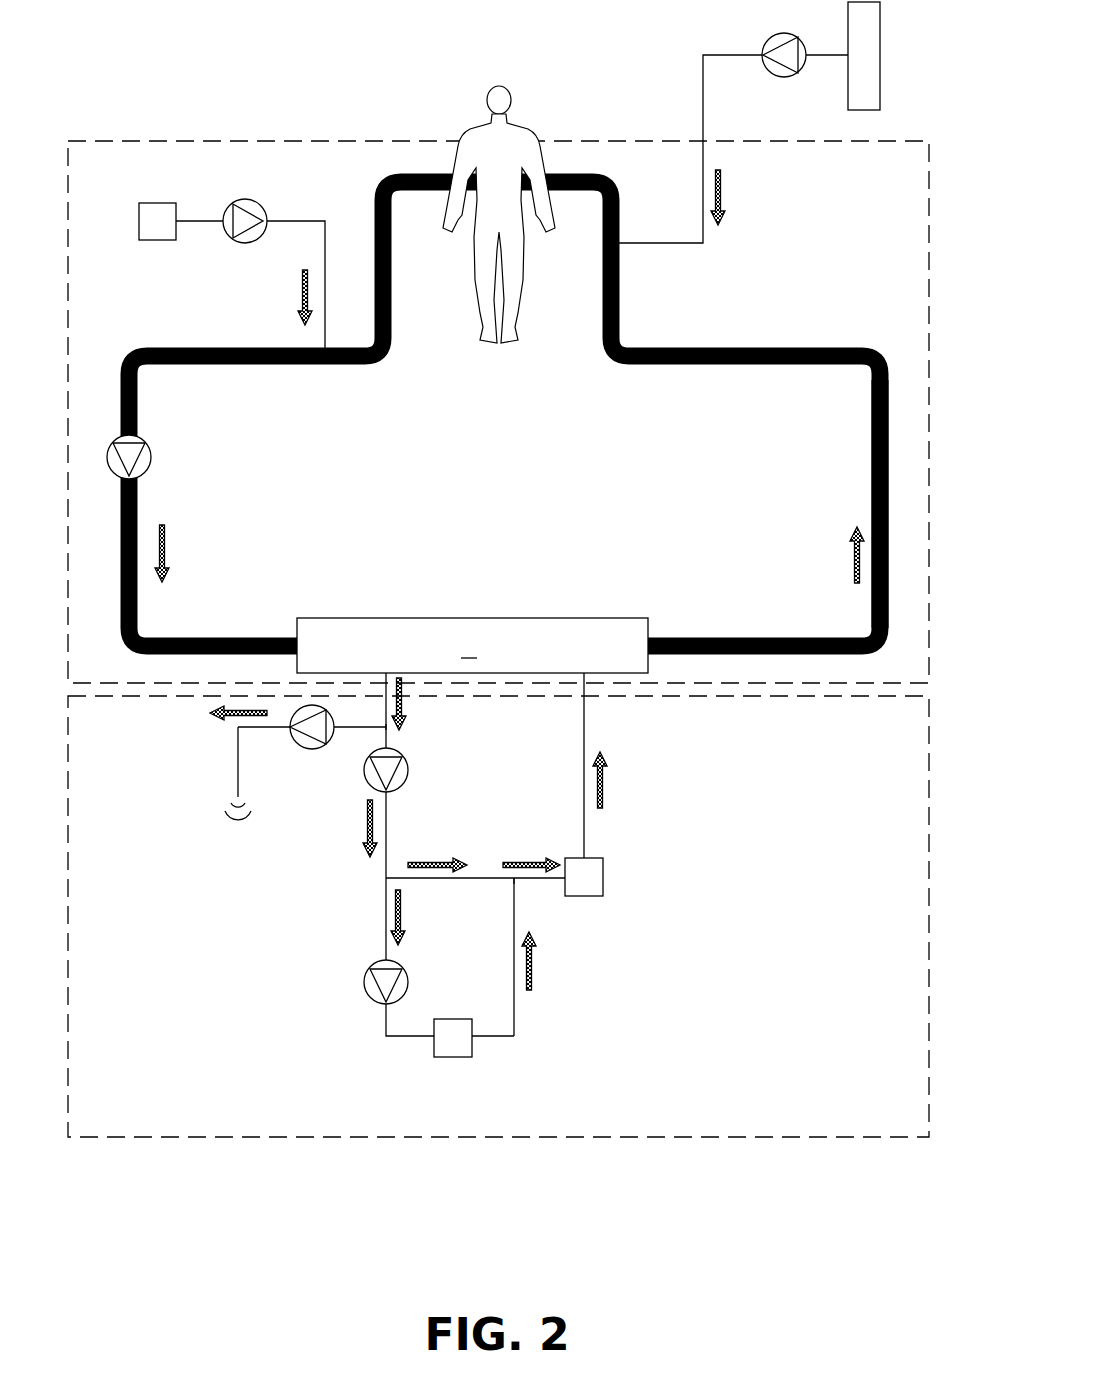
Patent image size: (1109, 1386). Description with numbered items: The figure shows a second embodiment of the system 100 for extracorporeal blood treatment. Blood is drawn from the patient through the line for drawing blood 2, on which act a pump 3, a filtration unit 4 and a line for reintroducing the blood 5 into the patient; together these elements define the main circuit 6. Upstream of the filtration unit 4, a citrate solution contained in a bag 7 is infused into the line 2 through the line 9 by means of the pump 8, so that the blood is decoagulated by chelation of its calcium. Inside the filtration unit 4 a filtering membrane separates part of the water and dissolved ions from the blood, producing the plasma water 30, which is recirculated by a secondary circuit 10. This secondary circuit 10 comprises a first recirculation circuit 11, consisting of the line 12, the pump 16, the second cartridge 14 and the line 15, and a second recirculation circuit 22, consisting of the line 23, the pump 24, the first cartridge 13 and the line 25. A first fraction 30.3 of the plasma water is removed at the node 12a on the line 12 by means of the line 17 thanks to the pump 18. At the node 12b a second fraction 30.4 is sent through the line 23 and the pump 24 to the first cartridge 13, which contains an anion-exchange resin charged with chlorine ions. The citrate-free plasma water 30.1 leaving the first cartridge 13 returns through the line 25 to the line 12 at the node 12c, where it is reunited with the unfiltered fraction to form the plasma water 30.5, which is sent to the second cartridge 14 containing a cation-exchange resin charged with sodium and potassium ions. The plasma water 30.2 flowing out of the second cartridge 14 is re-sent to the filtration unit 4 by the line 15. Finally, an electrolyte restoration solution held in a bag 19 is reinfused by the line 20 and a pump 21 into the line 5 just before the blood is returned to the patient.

The system 100 is at (120, 1198).
The line for drawing blood 2 is at (228, 348).
The pump 3 is at (151, 465).
The filtration unit 4 is at (472, 645).
The line for reintroducing the blood 5 is at (872, 450).
The main circuit 6 is at (112, 140).
The bag 7 is at (157, 203).
The pump 8 is at (245, 199).
The line 9 is at (312, 221).
The secondary circuit 10 is at (884, 1140).
The first recirculation circuit 11 is at (584, 842).
The line 12 is at (386, 722).
The node 12a is at (392, 730).
The node 12b is at (386, 878).
The node 12c is at (518, 882).
The first cartridge 13 is at (434, 1050).
The second cartridge 14 is at (603, 890).
The line 15 is at (584, 726).
The pump 16 is at (408, 772).
The line 17 is at (238, 790).
The pump 18 is at (306, 750).
The bag 19 is at (873, 68).
The line 20 is at (703, 95).
The pump 21 is at (768, 40).
The second recirculation circuit 22 is at (514, 1036).
The line 23 is at (386, 944).
The pump 24 is at (366, 994).
The line 25 is at (514, 1020).
The plasma water 30 is at (414, 706).
The plasma water 30.1 is at (555, 961).
The plasma water 30.2 is at (628, 780).
The first fraction 30.3 is at (216, 727).
The second fraction 30.4 is at (426, 917).
The plasma water 30.5 is at (523, 854).